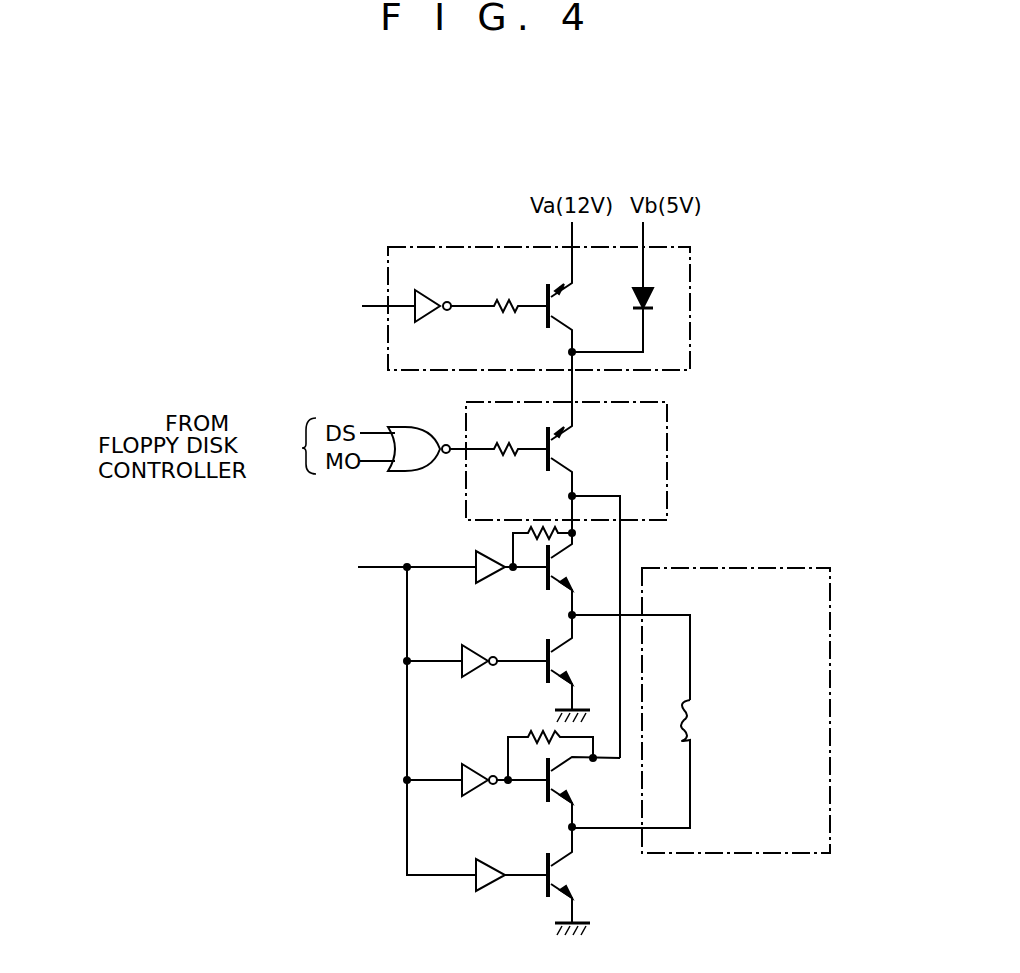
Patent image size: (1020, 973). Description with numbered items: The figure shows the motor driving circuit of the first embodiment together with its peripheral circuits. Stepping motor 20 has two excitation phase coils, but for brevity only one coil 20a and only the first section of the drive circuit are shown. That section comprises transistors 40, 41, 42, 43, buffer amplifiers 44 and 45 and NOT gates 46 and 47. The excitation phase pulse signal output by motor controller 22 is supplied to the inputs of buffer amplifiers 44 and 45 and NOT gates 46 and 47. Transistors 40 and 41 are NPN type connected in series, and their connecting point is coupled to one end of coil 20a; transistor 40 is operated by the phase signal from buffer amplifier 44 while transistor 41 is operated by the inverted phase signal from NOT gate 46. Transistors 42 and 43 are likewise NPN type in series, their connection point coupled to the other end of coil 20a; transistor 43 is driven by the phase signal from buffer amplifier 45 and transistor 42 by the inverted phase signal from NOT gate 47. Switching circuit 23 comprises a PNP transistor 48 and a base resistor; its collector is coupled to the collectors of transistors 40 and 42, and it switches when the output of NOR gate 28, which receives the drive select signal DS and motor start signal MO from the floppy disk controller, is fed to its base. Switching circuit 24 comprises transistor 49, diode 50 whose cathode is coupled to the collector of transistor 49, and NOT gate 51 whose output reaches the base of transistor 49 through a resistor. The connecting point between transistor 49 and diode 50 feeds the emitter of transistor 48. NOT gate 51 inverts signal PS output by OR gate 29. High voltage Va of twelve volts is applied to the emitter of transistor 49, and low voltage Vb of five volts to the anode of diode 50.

The stepping motor 20 is at (745, 568).
The excitation phase coil 20a is at (697, 720).
The motor controller 22 is at (288, 572).
The switching circuit 23 is at (670, 452).
The switching circuit 24 is at (695, 312).
The NOR gate 28 is at (412, 471).
The OR gate 29 is at (259, 307).
The transistor 40 is at (598, 570).
The transistor 41 is at (598, 664).
The transistor 42 is at (578, 782).
The transistor 43 is at (578, 877).
The buffer amplifier 44 is at (492, 583).
The buffer amplifier 45 is at (490, 891).
The NOT gate 46 is at (478, 677).
The NOT gate 47 is at (478, 796).
The PNP transistor 48 is at (578, 449).
The transistor 49 is at (578, 306).
The diode 50 is at (656, 292).
The NOT gate 51 is at (441, 292).